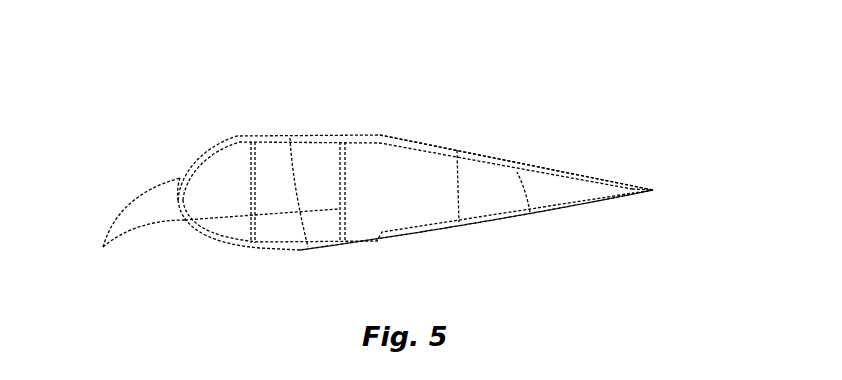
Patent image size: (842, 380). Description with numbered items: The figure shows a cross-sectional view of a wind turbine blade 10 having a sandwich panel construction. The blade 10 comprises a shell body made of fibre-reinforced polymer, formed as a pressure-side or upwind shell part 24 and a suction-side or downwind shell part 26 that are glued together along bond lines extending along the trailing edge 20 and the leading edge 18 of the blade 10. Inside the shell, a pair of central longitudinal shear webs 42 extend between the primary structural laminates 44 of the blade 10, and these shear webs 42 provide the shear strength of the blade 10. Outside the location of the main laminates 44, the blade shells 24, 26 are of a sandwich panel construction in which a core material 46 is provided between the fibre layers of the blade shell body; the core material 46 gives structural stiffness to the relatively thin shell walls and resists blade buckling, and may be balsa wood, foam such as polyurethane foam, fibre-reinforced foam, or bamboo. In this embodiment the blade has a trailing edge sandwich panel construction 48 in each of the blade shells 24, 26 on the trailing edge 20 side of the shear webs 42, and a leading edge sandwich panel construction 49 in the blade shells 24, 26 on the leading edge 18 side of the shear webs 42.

The wind turbine blade 10 is at (147, 63).
The leading edge 18 is at (125, 169).
The trailing edge 20 is at (673, 185).
The pressure-side shell part 24 is at (588, 207).
The suction-side shell part 26 is at (555, 167).
The shear webs 42 is at (266, 212).
The primary structural laminates 44 is at (302, 137).
The core material 46 is at (457, 150).
The trailing edge sandwich panel construction 48 is at (530, 212).
The leading edge sandwich panel construction 49 is at (139, 231).